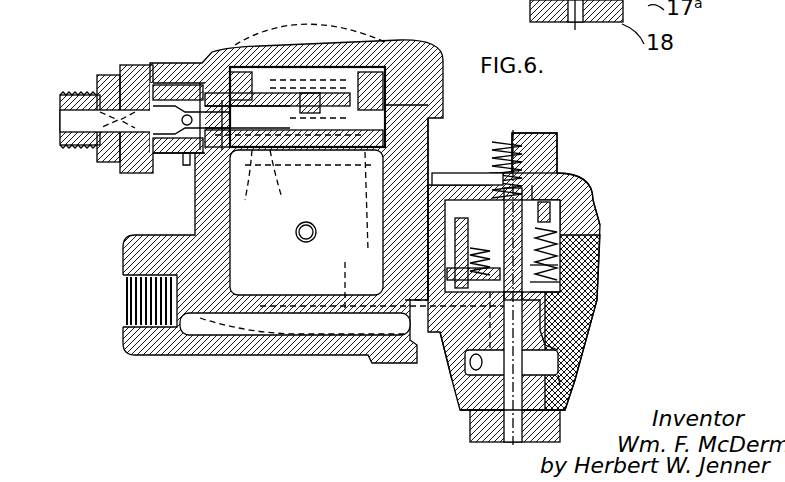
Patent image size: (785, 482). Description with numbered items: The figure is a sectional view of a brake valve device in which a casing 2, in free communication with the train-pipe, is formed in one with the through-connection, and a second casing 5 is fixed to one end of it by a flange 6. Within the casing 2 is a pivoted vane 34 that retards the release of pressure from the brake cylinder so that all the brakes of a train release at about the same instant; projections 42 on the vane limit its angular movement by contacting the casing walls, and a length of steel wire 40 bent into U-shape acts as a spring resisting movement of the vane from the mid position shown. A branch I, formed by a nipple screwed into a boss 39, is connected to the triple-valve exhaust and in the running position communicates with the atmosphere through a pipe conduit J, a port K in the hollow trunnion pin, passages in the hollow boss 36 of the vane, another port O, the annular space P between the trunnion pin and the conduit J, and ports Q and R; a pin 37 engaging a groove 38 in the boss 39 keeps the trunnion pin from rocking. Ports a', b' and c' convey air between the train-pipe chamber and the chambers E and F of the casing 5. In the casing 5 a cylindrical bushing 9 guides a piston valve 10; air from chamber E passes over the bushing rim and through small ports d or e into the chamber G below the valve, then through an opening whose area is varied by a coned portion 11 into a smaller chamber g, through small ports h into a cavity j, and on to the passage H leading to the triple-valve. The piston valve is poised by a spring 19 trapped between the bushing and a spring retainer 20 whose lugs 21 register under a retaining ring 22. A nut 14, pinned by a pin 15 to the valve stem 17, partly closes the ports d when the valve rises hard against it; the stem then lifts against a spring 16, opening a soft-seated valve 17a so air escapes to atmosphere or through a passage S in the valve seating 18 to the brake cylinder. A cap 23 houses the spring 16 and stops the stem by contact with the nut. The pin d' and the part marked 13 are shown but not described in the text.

The casing 2 is at (200, 212).
The hollow boss 36 is at (331, 166).
The passage H is at (255, 338).
The port or passage a' is at (382, 232).
The pin 37 is at (162, 64).
The boss 39 is at (135, 172).
The branch I is at (75, 121).
The groove 38 is at (177, 84).
The port K is at (353, 43).
The port Q is at (204, 63).
The pipe conduit J is at (222, 110).
The port R is at (183, 166).
The annular space P is at (249, 182).
The port O is at (279, 182).
The pivoted vane 34 is at (315, 229).
The projections 42 is at (314, 238).
The flange 6 is at (445, 115).
The U-shaped steel wire 40 is at (400, 115).
The port b' is at (414, 351).
The casing 5 is at (562, 258).
The chamber F is at (560, 386).
The spring 16 is at (556, 137).
The pin 15 is at (548, 172).
The nut 14 is at (573, 182).
The casing 13 is at (593, 210).
The cylindrical bushing 9 is at (600, 228).
The valve seating 18 is at (540, 432).
The small port d is at (531, 287).
The cap 23 is at (483, 150).
The piston valve 10 is at (470, 230).
The retaining ring 22 is at (562, 246).
The small port e is at (455, 232).
The chamber E is at (446, 258).
The spring retainer 20 is at (447, 272).
The pin d' is at (544, 212).
The spring 19 is at (556, 268).
The lugs 21 is at (567, 282).
The chamber G is at (557, 292).
The coned portion 11 is at (560, 305).
The smaller chamber g is at (562, 325).
The small ports h is at (552, 340).
The cavity j is at (558, 360).
The soft-seated valve 17a is at (556, 411).
The valve stem 17 is at (440, 368).
The port c' is at (459, 365).
The passage S is at (528, 10).